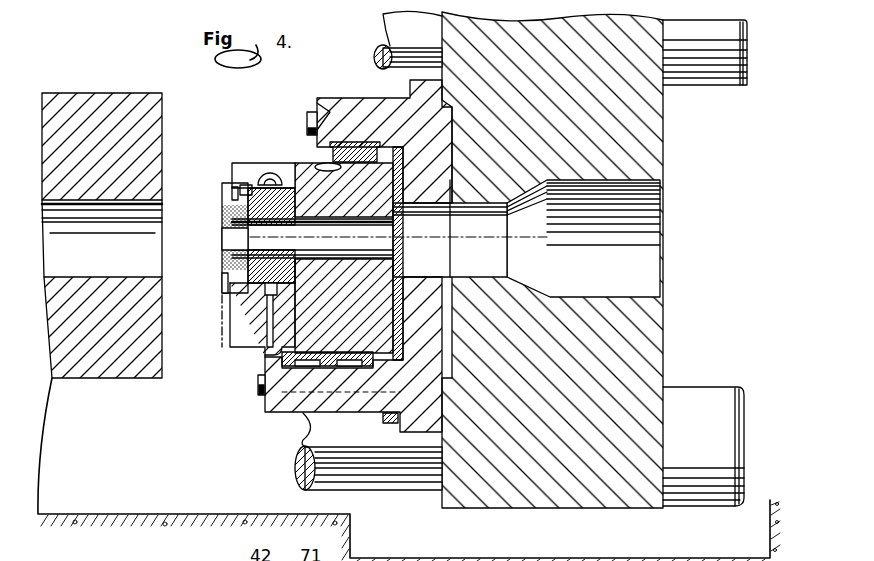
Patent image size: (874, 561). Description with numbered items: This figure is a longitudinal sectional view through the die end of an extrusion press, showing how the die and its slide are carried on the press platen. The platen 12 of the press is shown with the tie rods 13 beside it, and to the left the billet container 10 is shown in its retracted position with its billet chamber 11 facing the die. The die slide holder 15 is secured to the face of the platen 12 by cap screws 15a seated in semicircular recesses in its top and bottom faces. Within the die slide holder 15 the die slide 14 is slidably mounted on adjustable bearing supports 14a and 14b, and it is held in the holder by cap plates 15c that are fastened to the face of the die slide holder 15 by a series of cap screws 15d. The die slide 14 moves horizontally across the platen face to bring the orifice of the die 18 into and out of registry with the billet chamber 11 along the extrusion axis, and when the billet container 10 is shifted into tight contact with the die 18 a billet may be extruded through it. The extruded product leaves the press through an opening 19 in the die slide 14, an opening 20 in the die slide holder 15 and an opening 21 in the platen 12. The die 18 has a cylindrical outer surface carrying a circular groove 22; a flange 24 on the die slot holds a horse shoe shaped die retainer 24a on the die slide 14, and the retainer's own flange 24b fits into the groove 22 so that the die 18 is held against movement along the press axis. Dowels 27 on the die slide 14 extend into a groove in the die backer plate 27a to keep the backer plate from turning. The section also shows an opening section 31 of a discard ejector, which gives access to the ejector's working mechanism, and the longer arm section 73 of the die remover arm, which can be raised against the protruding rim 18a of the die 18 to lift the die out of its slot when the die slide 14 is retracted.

The billet container 10 is at (80, 100).
The billet chamber 11 is at (45, 232).
The platen 12 is at (542, 485).
The tie rods 13 is at (397, 27).
The die slide 14 is at (344, 190).
The adjustable bearing support 14a is at (343, 142).
The adjustable bearing support 14b is at (332, 353).
The die slide holder 15 is at (238, 368).
The cap screws 15a is at (384, 418).
The cap plates 15c is at (324, 103).
The cap screws 15d is at (258, 388).
The die 18 is at (238, 218).
The protruding rim 18a is at (222, 255).
The opening 19 is at (344, 306).
The opening 20 is at (425, 268).
The opening 21 is at (540, 282).
The circular groove 22 is at (235, 200).
The flange 24 is at (222, 290).
The die retainer 24a is at (224, 272).
The flange 24b is at (242, 252).
The dowels 27 is at (276, 288).
The die backer plate 27a is at (328, 273).
The opening section 31 is at (315, 162).
The arm section 73 is at (222, 322).